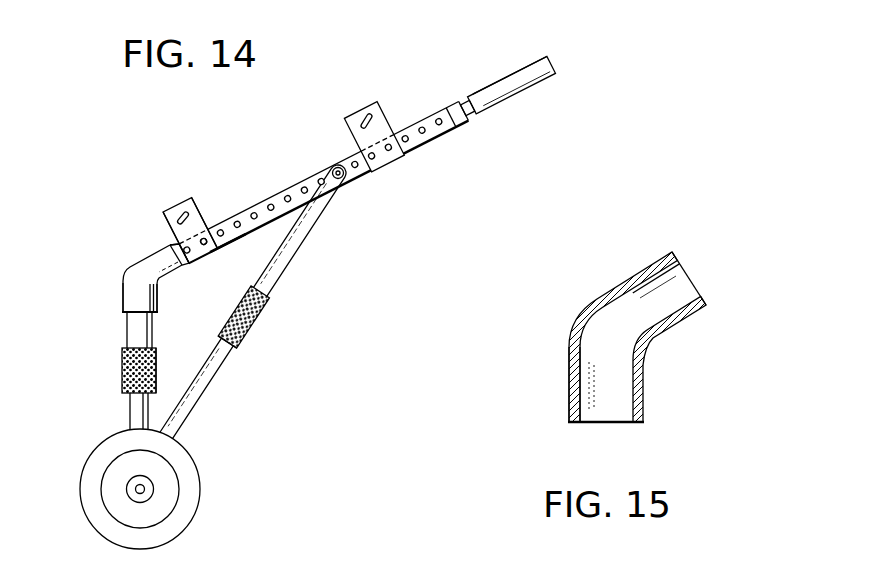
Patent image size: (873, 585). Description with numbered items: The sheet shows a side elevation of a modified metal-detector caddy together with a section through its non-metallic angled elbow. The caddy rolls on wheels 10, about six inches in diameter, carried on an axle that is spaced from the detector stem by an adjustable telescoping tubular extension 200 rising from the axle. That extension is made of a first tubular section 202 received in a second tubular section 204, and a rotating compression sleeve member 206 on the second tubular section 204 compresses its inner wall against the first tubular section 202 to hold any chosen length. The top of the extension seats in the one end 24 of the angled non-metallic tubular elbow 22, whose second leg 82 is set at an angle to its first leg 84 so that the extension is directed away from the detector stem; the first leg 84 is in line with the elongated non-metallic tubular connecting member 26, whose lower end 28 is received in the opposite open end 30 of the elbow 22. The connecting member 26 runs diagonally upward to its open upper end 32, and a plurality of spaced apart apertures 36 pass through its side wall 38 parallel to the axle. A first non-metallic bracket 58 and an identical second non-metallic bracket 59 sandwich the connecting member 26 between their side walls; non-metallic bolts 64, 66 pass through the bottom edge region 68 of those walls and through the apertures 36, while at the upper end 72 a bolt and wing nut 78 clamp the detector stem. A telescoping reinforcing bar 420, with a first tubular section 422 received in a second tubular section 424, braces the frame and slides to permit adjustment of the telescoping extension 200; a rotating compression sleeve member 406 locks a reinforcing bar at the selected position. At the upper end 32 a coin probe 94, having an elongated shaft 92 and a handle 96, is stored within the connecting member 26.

In FIG. 14, the wheels 10 is at (203, 492).
In FIG. 14, the angled non-metallic tubular elbow 22 is at (121, 278).
In FIG. 15, the angled non-metallic tubular elbow 22 is at (568, 372).
In FIG. 15, the one end of elbow 24 is at (605, 415).
In FIG. 14, the elongated non-metallic tubular connecting member 26 is at (290, 188).
In FIG. 14, the lower end of connecting member 28 is at (170, 232).
In FIG. 15, the opposite open end of elbow 30 is at (686, 272).
In FIG. 14, the open upper end of connecting member 32 is at (462, 122).
In FIG. 14, the spaced apart apertures 36 is at (424, 134).
In FIG. 14, the side wall 38 is at (351, 181).
In FIG. 14, the first non-metallic bracket 58 is at (189, 199).
In FIG. 14, the second non-metallic bracket 59 is at (368, 104).
In FIG. 14, the non-metallic bolt 64 is at (191, 264).
In FIG. 14, the non-metallic bolt 66 is at (217, 243).
In FIG. 14, the bottom edge region of side walls 68 is at (204, 246).
In FIG. 14, the upper end of side walls 72 is at (163, 207).
In FIG. 14, the non-metallic wing nut 78 is at (205, 200).
In FIG. 14, the second leg of elbow 82 is at (122, 303).
In FIG. 15, the second leg of elbow 82 is at (645, 397).
In FIG. 14, the first leg of elbow 84 is at (148, 256).
In FIG. 15, the first leg of elbow 84 is at (617, 285).
In FIG. 14, the elongated shaft of coin probe 92 is at (471, 101).
In FIG. 14, the coin probe 94 is at (553, 61).
In FIG. 14, the handle of coin probe 96 is at (521, 68).
In FIG. 14, the adjustable telescoping tubular extension 200 is at (118, 375).
In FIG. 14, the first tubular section 202 is at (127, 417).
In FIG. 14, the second tubular section 204 is at (122, 340).
In FIG. 14, the rotating compression sleeve member 206 is at (155, 373).
In FIG. 14, the rotating compression sleeve member 406 is at (244, 342).
In FIG. 14, the telescoping reinforcing bar 420 is at (259, 322).
In FIG. 14, the first tubular section 422 is at (211, 384).
In FIG. 14, the second tubular section 424 is at (297, 250).